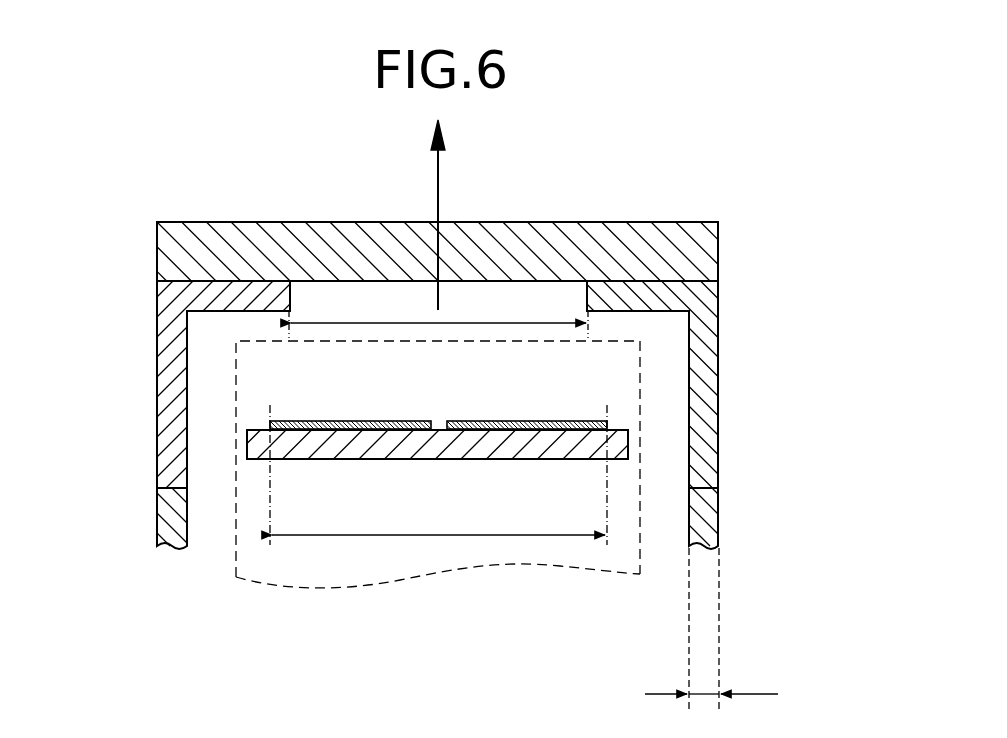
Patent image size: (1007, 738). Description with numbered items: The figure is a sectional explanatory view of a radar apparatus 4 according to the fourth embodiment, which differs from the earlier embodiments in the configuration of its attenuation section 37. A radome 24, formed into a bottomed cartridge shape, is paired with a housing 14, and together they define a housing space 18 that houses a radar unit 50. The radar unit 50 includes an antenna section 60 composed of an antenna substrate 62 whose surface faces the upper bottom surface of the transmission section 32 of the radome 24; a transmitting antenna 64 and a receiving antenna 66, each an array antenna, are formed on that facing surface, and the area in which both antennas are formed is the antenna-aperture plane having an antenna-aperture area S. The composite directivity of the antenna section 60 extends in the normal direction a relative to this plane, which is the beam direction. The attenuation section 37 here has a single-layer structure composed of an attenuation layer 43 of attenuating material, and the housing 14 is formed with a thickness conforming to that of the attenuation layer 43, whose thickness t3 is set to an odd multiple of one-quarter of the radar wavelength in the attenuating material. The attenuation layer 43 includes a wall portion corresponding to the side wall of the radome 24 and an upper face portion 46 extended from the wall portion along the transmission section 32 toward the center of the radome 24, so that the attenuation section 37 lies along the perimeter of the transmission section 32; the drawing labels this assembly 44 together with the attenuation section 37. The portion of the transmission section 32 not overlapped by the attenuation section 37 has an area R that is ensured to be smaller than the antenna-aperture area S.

The radar apparatus 4 is at (90, 158).
The radome 24 is at (125, 219).
The transmission section 32 is at (248, 222).
The housing space 18 is at (577, 283).
The beam direction a is at (440, 197).
The area R is at (438, 314).
The upper face portion 46 is at (652, 304).
The attenuation layer 43 is at (719, 335).
The holding member 44 is at (800, 255).
The attenuation section 37 is at (652, 384).
The radar unit 50 is at (236, 385).
The antenna section 60 is at (437, 438).
The antenna substrate 62 is at (522, 460).
The transmitting antenna 64 is at (370, 420).
The receiving antenna 66 is at (510, 420).
The antenna-aperture area S is at (438, 475).
The housing 14 is at (125, 517).
The thickness t3 is at (703, 694).